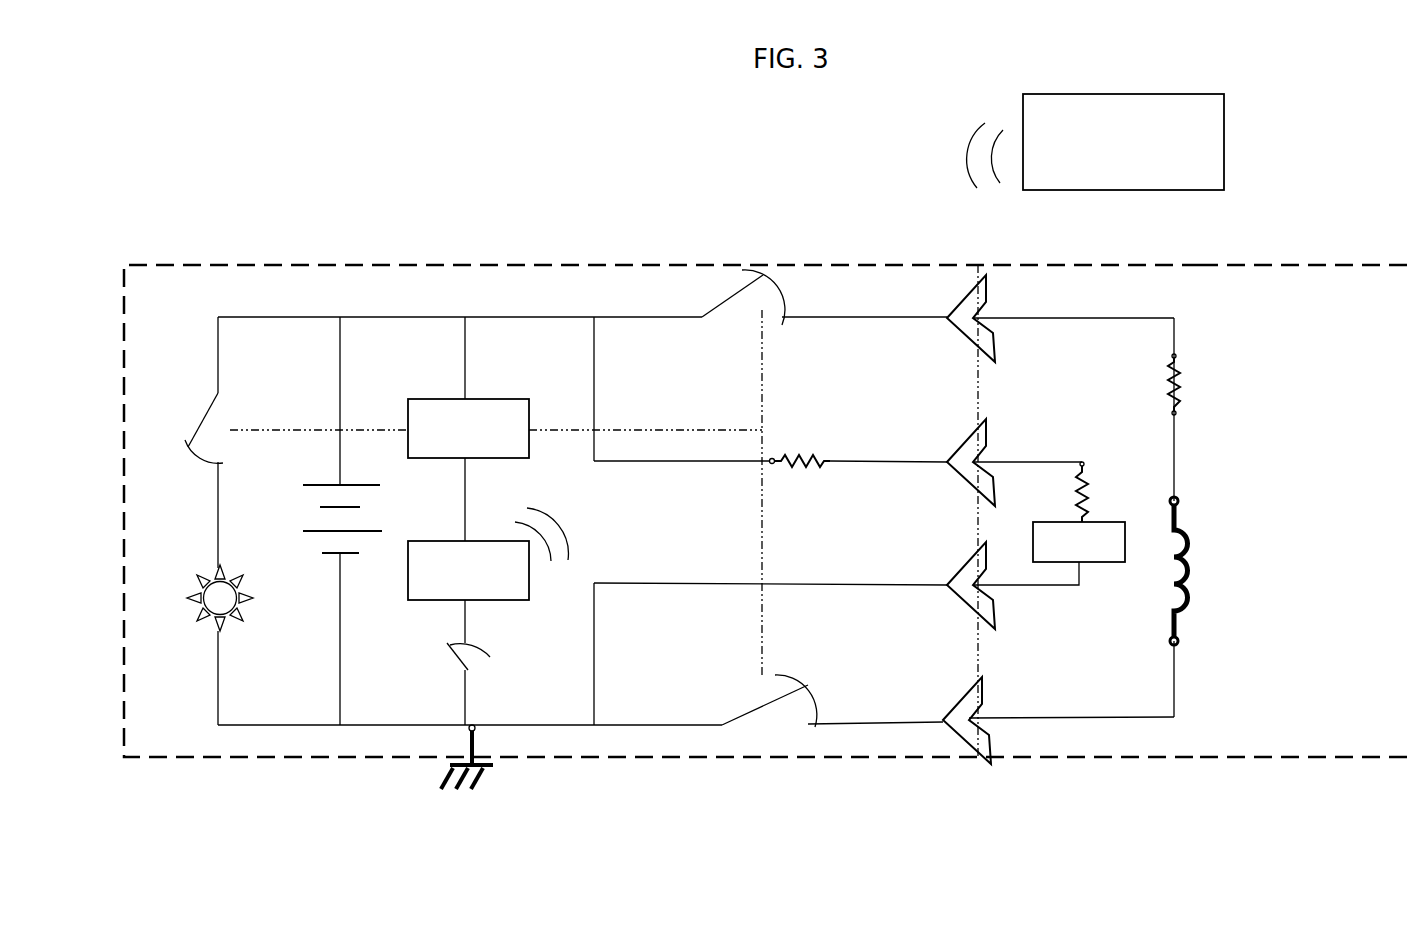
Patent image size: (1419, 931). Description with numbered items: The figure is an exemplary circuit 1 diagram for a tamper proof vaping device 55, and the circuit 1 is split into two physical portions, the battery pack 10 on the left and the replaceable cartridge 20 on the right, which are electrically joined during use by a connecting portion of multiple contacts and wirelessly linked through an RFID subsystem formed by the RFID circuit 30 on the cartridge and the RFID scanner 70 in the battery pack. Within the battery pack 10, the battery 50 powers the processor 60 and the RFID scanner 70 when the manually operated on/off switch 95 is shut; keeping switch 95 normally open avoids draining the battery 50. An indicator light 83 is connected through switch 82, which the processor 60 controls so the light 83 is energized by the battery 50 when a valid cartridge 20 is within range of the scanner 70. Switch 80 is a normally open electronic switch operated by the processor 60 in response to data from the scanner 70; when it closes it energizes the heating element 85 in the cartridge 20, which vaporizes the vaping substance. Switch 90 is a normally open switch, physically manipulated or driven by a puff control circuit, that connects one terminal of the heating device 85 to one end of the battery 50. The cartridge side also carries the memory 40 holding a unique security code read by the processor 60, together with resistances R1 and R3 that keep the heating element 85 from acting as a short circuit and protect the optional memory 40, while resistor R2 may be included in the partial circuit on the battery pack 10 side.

The circuit 1 is at (660, 307).
The vaping device battery pack 10 is at (422, 260).
The e-juice cartridge 20 is at (1318, 262).
The RFID circuit 30 is at (1141, 157).
The memory device 40 is at (1095, 557).
The battery 50 is at (297, 465).
The tamper proof vaping device 55 is at (512, 193).
The processor 60 is at (485, 444).
The RFID scanner 70 is at (485, 586).
The switch 80 is at (742, 268).
The switch 82 is at (175, 437).
The indicator light 83 is at (165, 592).
The heating element 85 is at (1203, 578).
The switch 90 is at (776, 733).
The on/off switch 95 is at (495, 680).
The resistor R1 is at (1187, 393).
The resistor R2 is at (800, 440).
The resistor R3 is at (1092, 498).